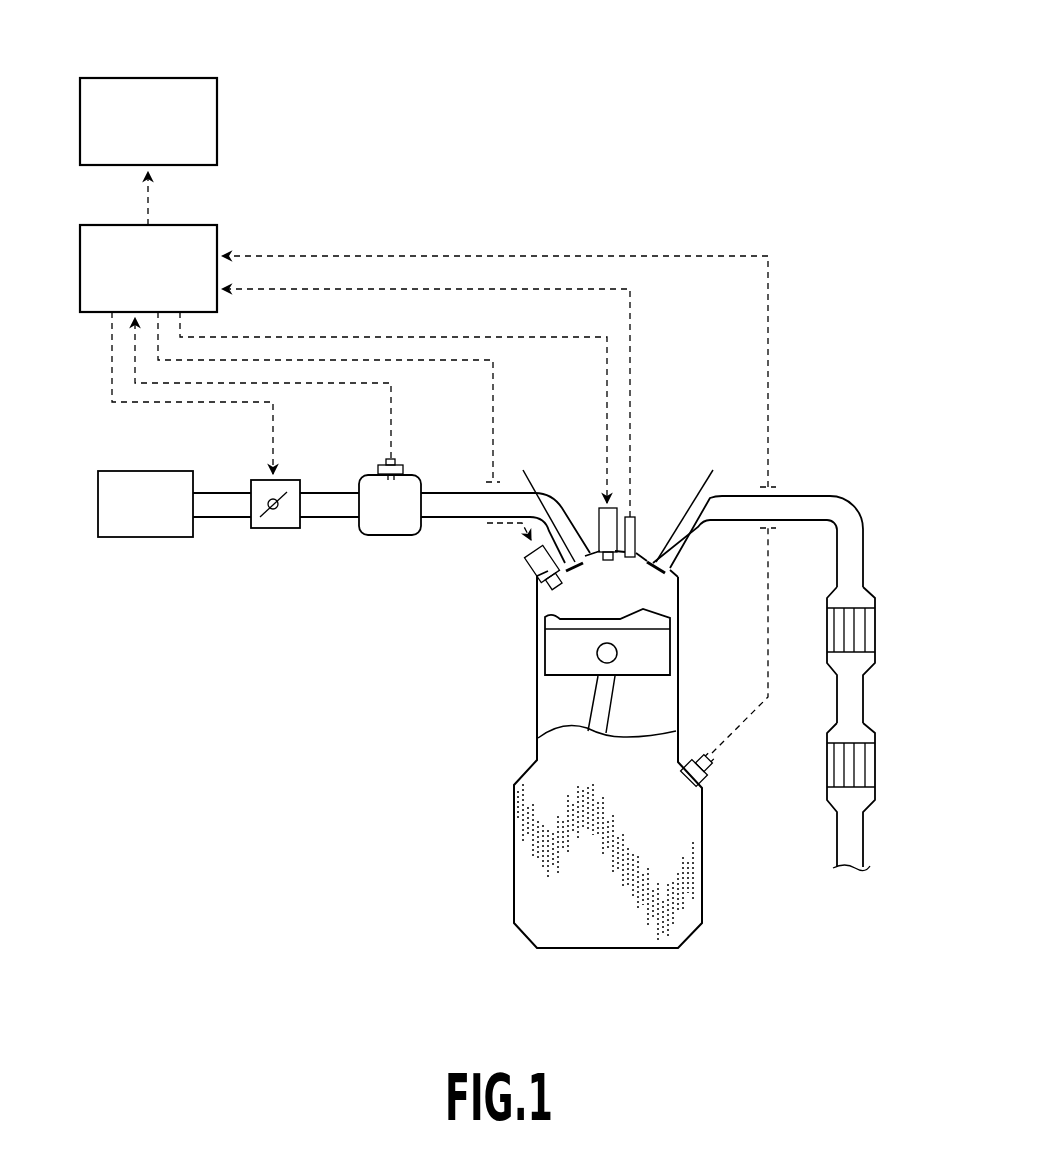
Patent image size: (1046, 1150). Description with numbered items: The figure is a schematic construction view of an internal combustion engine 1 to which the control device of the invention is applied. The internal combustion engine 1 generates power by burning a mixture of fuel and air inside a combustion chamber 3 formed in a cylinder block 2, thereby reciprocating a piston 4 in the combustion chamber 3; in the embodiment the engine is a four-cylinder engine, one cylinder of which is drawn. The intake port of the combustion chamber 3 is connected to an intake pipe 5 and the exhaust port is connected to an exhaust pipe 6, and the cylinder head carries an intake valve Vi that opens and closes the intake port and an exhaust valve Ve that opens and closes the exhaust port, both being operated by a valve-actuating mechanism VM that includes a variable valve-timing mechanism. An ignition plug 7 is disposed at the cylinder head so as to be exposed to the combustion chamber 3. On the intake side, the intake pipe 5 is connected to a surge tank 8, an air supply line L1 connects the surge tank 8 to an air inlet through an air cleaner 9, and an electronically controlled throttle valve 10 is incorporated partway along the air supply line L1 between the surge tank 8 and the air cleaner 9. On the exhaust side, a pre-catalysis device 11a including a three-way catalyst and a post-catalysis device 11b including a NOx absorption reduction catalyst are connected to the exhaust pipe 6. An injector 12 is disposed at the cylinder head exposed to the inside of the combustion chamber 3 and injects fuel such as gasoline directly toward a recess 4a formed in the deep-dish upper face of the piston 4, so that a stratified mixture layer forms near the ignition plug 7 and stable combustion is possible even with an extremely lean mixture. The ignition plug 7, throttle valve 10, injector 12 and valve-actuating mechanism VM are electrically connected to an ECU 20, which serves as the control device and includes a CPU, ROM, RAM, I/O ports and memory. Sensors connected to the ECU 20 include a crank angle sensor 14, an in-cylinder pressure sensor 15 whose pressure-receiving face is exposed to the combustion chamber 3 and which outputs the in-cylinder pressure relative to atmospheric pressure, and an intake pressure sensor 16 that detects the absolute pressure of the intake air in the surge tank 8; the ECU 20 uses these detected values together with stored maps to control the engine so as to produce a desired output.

The internal combustion engine 1 is at (384, 668).
The cylinder block 2 is at (523, 842).
The combustion chamber 3 is at (614, 607).
The piston 4 is at (556, 652).
The recess 4a is at (564, 611).
The intake pipe 5 is at (571, 521).
The exhaust pipe 6 is at (684, 540).
The ignition plug 7 is at (599, 505).
The surge tank 8 is at (388, 536).
The air cleaner 9 is at (140, 538).
The throttle valve 10 is at (272, 529).
The pre-catalysis device 11a is at (870, 630).
The post-catalysis device 11b is at (870, 767).
The injector 12 is at (528, 562).
The crank angle sensor 14 is at (713, 773).
The in-cylinder pressure sensor 15 is at (634, 521).
The intake pressure sensor 16 is at (402, 463).
The ECU 20 is at (183, 223).
The air supply line L1 is at (325, 518).
The intake valve Vi is at (523, 470).
The exhaust valve Ve is at (713, 470).
The valve-actuating mechanism VM is at (148, 78).